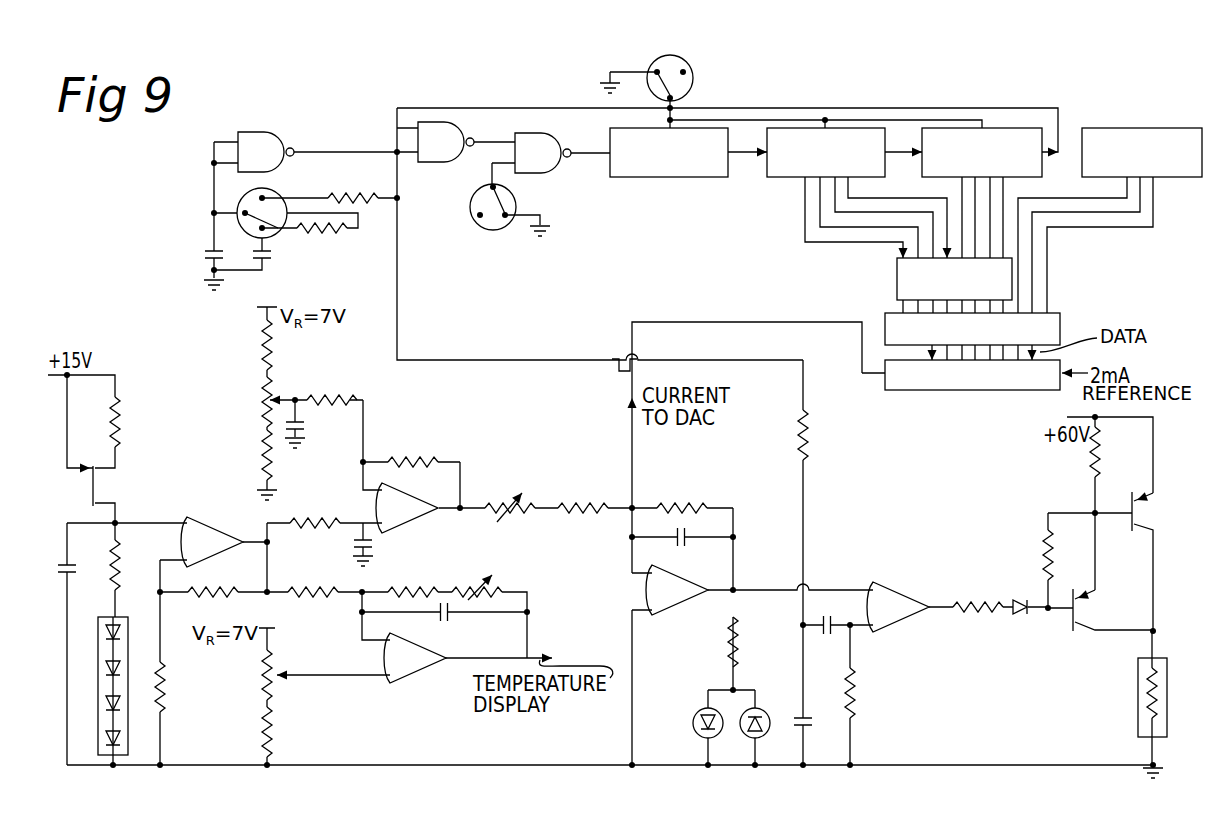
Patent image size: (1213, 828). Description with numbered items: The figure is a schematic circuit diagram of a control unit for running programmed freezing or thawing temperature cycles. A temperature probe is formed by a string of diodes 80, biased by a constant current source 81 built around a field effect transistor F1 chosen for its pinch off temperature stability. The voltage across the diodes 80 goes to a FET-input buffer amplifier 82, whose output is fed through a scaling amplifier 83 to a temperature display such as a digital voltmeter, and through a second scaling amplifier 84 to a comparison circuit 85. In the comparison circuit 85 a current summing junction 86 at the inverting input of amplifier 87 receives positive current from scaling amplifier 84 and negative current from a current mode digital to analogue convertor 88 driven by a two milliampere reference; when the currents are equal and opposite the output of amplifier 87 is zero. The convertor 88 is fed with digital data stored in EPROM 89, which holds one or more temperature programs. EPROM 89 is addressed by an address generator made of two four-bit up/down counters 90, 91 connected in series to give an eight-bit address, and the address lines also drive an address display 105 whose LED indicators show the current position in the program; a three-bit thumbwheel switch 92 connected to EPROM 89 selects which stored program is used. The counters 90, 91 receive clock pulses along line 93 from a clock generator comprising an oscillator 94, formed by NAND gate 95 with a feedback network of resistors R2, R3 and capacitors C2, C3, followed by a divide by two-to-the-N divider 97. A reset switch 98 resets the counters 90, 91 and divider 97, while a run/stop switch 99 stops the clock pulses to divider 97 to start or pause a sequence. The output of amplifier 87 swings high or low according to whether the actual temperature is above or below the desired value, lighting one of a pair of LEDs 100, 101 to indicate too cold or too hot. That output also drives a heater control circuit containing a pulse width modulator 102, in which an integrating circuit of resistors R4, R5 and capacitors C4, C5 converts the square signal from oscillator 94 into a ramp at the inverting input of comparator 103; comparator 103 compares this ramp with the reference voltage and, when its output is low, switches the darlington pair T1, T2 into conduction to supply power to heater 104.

The string of diodes 80 is at (105, 618).
The constant current source 81 is at (58, 491).
The buffer amplifier 82 is at (211, 500).
The scaling amplifier 83 is at (400, 668).
The scaling amplifier 84 is at (402, 513).
The comparison circuit 85 is at (606, 562).
The current summing junction 86 is at (628, 503).
The amplifier 87 is at (668, 602).
The digital to analogue convertor 88 is at (898, 381).
The EPROM 89 is at (1053, 323).
The counter 90 is at (877, 168).
The counter 91 is at (1033, 168).
The thumbwheel switch 92 is at (1180, 168).
The line 93 is at (740, 153).
The oscillator 94 is at (193, 222).
The NAND gate 95 is at (270, 140).
The divider 97 is at (620, 178).
The reset switch 98 is at (682, 92).
The clock run/stop switch 99 is at (478, 199).
The LED 100 is at (688, 724).
The LED 101 is at (766, 716).
The pulse width modulator 102 is at (872, 650).
The comparator 103 is at (897, 597).
The heater 104 is at (1138, 718).
The address display 105 is at (897, 293).
The field effect transistor F1 is at (98, 488).
The darlington transistor T1 is at (1067, 615).
The darlington transistor T2 is at (1130, 530).
The resistor R2 is at (353, 185).
The resistor R3 is at (322, 246).
The resistor R4 is at (864, 695).
The resistor R5 is at (817, 435).
The capacitor C2 is at (200, 265).
The capacitor C3 is at (272, 272).
The capacitor C4 is at (816, 731).
The capacitor C5 is at (827, 644).